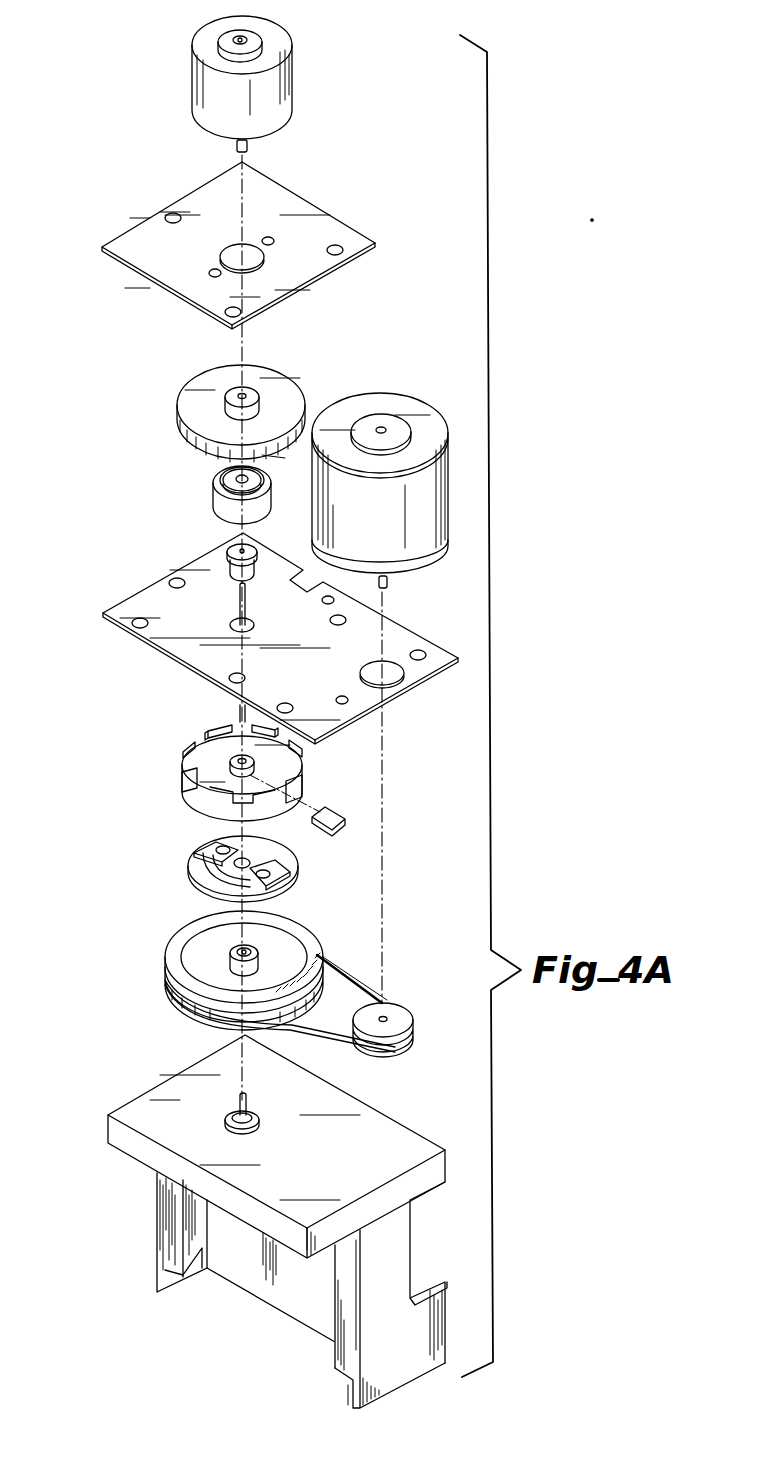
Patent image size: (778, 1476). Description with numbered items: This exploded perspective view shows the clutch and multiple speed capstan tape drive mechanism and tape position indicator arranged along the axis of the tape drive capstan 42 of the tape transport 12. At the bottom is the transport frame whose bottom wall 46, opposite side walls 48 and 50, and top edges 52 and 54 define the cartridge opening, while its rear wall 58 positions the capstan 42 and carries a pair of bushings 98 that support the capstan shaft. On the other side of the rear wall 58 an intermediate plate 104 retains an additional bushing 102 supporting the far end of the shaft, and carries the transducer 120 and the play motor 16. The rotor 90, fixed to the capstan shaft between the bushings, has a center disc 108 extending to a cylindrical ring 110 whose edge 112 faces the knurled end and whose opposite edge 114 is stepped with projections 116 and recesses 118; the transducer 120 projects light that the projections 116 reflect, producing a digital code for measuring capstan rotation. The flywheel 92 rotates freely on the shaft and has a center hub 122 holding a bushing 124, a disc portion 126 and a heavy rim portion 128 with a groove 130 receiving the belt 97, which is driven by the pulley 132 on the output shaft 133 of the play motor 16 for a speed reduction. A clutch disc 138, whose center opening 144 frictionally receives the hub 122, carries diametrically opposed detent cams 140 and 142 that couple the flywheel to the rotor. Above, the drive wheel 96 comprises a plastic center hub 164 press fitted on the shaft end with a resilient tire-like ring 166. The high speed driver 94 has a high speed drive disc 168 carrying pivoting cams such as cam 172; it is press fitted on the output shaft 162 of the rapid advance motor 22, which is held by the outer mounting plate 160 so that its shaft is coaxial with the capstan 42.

The tape transport 12 is at (261, 1221).
The play motor 16 is at (408, 405).
The rapid advance motor 22 is at (285, 88).
The tape drive capstan 42 is at (247, 600).
The bottom wall 46 is at (292, 1297).
The side wall 48 is at (200, 1228).
The side wall 50 is at (398, 1264).
The top edge 52 is at (188, 1270).
The top edge 54 is at (345, 1334).
The rear wall 58 is at (410, 1142).
The rotor 90 is at (243, 773).
The flywheel 92 is at (249, 973).
The high speed driver 94 is at (241, 423).
The drive wheel 96 is at (242, 507).
The belt 97 is at (328, 1046).
The bushings 98 is at (224, 1123).
The bushing 102 is at (226, 550).
The intermediate plate 104 is at (180, 646).
The center disc 108 is at (232, 773).
The cylindrical ring 110 is at (266, 813).
The edge 112 is at (200, 808).
The edge 114 is at (303, 765).
The projections 116 is at (190, 788).
The recesses 118 is at (228, 736).
The transducer 120 is at (334, 795).
The center hub 122 is at (260, 973).
The bushing 124 is at (230, 954).
The disc portion 126 is at (270, 944).
The rim portion 128 is at (313, 950).
The groove 130 is at (306, 1013).
The pulley 132 is at (412, 1020).
The output shaft 133 is at (388, 584).
The clutch disc 138 is at (247, 878).
The detent cam 140 is at (196, 850).
The detent cam 142 is at (292, 880).
The center opening 144 is at (215, 882).
The outer mounting plate 160 is at (375, 243).
The output shaft 162 is at (248, 149).
The center hub 164 is at (264, 478).
The tire-like ring 166 is at (258, 502).
The high speed drive disc 168 is at (286, 385).
The high speed cam 172 is at (266, 458).